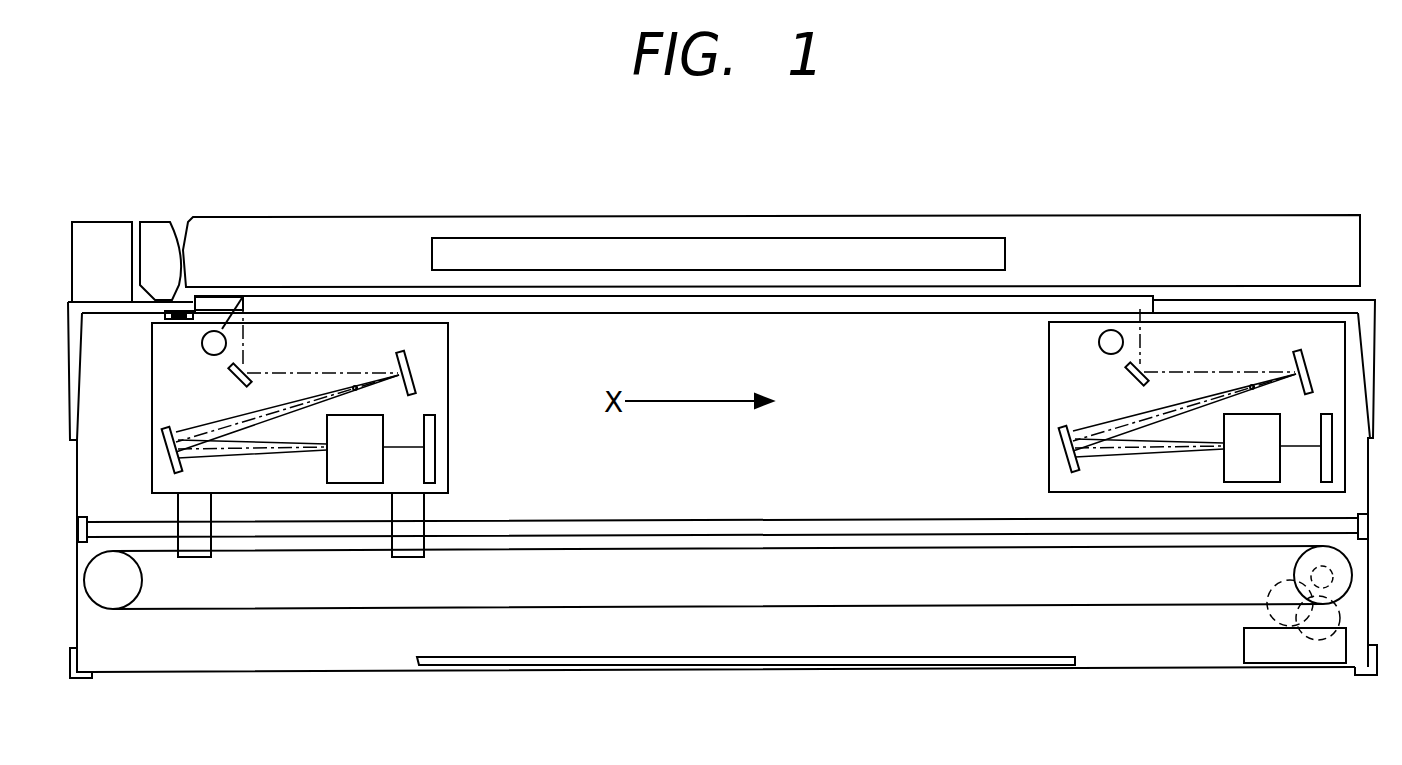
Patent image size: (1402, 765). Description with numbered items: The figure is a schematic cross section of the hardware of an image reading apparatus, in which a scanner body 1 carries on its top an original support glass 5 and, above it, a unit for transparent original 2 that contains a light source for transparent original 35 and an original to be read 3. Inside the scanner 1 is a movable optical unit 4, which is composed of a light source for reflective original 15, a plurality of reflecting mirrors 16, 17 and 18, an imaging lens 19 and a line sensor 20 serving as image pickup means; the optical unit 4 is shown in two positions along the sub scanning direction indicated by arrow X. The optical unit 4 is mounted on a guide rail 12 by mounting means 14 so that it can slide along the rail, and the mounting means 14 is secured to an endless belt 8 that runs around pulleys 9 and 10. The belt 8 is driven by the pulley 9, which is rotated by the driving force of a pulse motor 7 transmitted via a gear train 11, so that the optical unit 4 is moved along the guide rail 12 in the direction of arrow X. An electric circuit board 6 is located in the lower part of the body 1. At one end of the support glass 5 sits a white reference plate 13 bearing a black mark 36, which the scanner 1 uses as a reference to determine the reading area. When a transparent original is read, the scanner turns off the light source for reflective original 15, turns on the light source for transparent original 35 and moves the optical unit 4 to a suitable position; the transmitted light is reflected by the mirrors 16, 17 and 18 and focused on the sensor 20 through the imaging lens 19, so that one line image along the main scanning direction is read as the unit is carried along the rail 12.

The body of a scanner 1 is at (232, 681).
The unit for transparent original 2 is at (888, 277).
The original to be read 3 is at (513, 290).
The movable optical unit 4 is at (343, 337).
The original support glass 5 is at (780, 300).
The electric circuit board 6 is at (450, 664).
The pulse motor 7 is at (1268, 653).
The endless belt 8 is at (292, 610).
The pulley 9 is at (1297, 562).
The pulley 10 is at (113, 602).
The gear train 11 is at (1272, 616).
The guide rail 12 is at (748, 528).
The white reference plate 13 is at (205, 308).
The mounting means 14 is at (205, 559).
The light source for reflective original 15 is at (202, 343).
The reflecting mirror 16 is at (233, 378).
The reflecting mirror 17 is at (412, 362).
The reflecting mirror 18 is at (170, 463).
The imaging lens 19 is at (372, 467).
The line sensor 20 is at (432, 434).
The light source for transparent original 35 is at (680, 250).
The black mark 36 is at (173, 305).